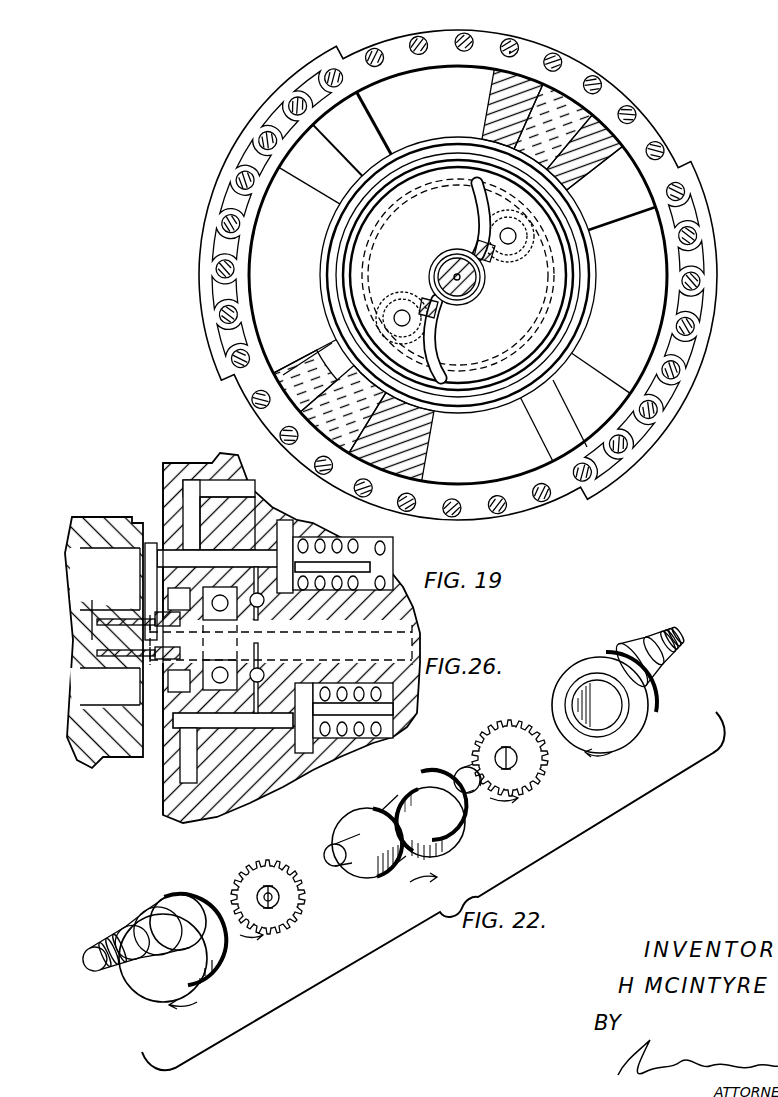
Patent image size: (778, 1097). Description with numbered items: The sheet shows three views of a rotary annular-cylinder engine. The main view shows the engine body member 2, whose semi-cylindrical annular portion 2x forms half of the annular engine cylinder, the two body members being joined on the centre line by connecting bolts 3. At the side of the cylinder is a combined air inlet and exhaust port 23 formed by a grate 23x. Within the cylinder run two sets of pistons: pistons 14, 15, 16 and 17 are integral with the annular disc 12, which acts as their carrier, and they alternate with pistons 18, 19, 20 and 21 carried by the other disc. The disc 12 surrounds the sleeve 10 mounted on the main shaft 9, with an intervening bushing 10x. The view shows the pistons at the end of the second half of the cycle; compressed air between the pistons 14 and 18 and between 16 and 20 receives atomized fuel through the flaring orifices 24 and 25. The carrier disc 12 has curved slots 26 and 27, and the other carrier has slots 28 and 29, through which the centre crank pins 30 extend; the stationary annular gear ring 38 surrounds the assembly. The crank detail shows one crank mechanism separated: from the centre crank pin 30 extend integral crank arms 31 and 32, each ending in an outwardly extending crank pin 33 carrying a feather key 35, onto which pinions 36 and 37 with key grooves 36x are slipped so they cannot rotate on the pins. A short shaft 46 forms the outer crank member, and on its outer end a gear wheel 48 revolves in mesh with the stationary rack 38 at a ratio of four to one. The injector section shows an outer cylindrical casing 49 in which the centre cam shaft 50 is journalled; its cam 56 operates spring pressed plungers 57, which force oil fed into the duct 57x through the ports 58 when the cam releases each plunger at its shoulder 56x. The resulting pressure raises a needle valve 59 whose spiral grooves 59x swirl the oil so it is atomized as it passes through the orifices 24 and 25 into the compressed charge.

In FIG. 19, the engine body member 2 is at (492, 42).
In FIG. 19, the semi-cylindrical annular portion 2x is at (430, 83).
In FIG. 19, the connecting bolts 3 is at (510, 73).
In FIG. 19, the combined air inlet and exhaust port 23 is at (532, 103).
In FIG. 19, the grate 23x is at (580, 118).
In FIG. 19, the piston 20 is at (603, 115).
In FIG. 19, the piston 17 is at (360, 123).
In FIG. 19, the orifice 24 is at (345, 143).
In FIG. 26, the orifice 24 is at (118, 576).
In FIG. 19, the annular disc 12 is at (438, 143).
In FIG. 19, the piston 21 is at (313, 170).
In FIG. 19, the curved slot 27 is at (458, 198).
In FIG. 19, the sleeve 10 is at (445, 252).
In FIG. 19, the centre crank pin 30 is at (430, 300).
In FIG. 22, the centre crank pin 30 is at (413, 883).
In FIG. 19, the annular gear ring 38 is at (345, 270).
In FIG. 19, the curved slot 28 is at (405, 302).
In FIG. 19, the gear wheel 48 is at (345, 322).
In FIG. 19, the short shaft 46 is at (395, 312).
In FIG. 22, the short shaft 46 is at (652, 650).
In FIG. 19, the crank arm 31 is at (577, 230).
In FIG. 22, the crank arm 31 is at (367, 887).
In FIG. 19, the piston 16 is at (611, 189).
In FIG. 19, the curved slot 29 is at (588, 277).
In FIG. 19, the main shaft 9 is at (468, 291).
In FIG. 19, the bushing 10x is at (458, 298).
In FIG. 19, the curved slot 26 is at (452, 360).
In FIG. 19, the piston 19 is at (603, 387).
In FIG. 19, the orifice 25 is at (633, 428).
In FIG. 19, the piston 15 is at (567, 440).
In FIG. 19, the pinion 36 is at (404, 437).
In FIG. 22, the pinion 36 is at (270, 920).
In FIG. 19, the piston 18 is at (333, 447).
In FIG. 19, the piston 14 is at (273, 373).
In FIG. 26, the port 58 is at (165, 560).
In FIG. 26, the outer cylindrical casing 49 is at (166, 470).
In FIG. 26, the cam 56 is at (280, 700).
In FIG. 26, the shoulder 56x is at (281, 645).
In FIG. 26, the centre cam shaft 50 is at (412, 648).
In FIG. 26, the spring pressed plunger 57 is at (110, 520).
In FIG. 26, the duct 57x is at (185, 458).
In FIG. 26, the needle valve 59 is at (135, 670).
In FIG. 26, the spiral grooves 59x is at (150, 620).
In FIG. 22, the key groove 36x is at (262, 886).
In FIG. 22, the pinion 37 is at (518, 783).
In FIG. 22, the crank arm 32 is at (447, 862).
In FIG. 22, the feather key 35 is at (356, 828).
In FIG. 22, the crank pin 33 is at (463, 775).